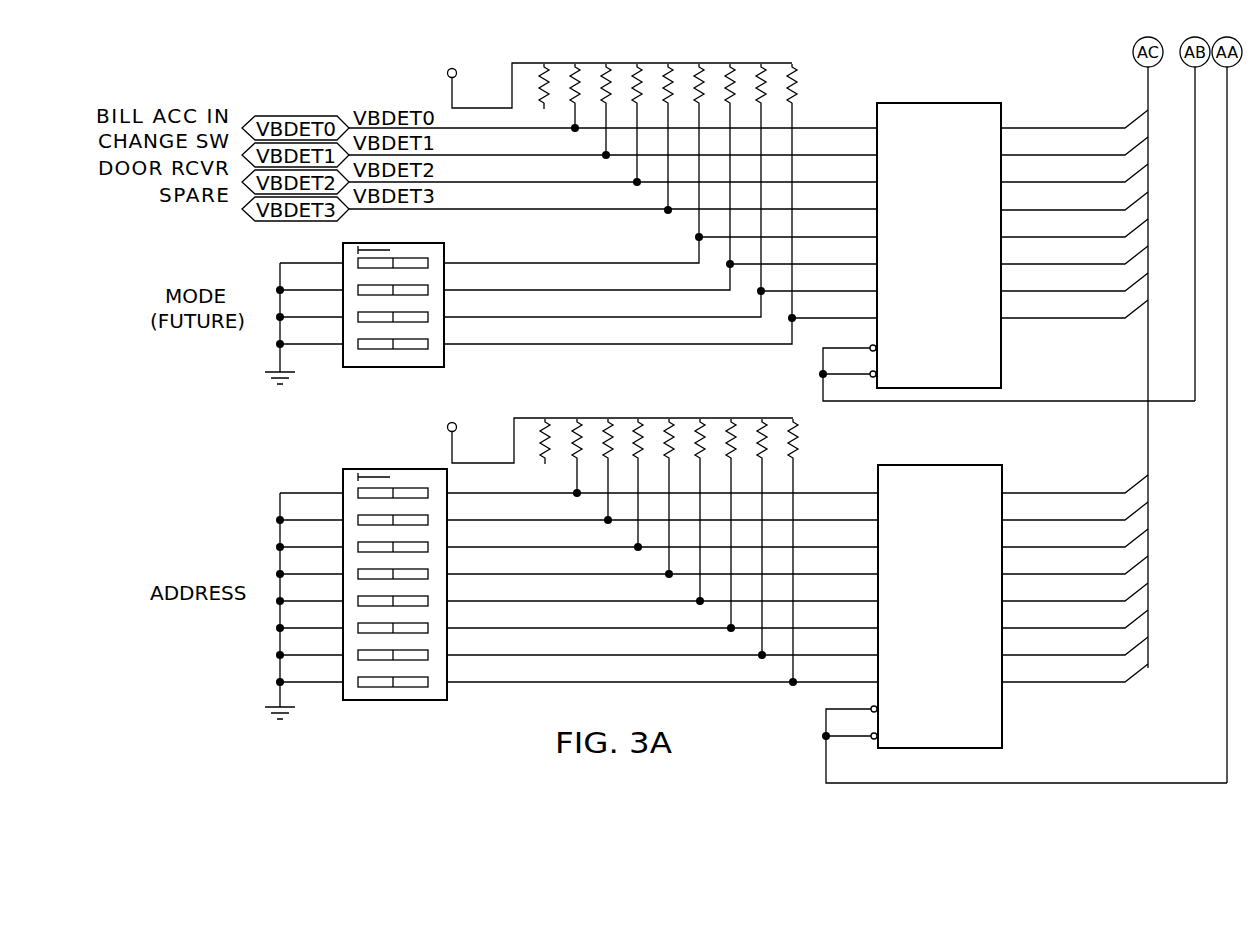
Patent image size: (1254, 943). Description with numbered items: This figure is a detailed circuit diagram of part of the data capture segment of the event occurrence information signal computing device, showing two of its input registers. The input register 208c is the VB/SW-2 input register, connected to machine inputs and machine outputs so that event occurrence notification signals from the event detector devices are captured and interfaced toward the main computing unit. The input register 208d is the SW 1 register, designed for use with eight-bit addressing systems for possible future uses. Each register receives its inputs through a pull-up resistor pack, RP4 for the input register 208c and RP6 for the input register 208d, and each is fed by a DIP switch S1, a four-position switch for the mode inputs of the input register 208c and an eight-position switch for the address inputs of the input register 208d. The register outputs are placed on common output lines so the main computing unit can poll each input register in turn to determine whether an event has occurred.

The input register 208c is at (977, 347).
The input register 208d is at (980, 710).
The 4.7K SIP pull-up resistor pack for VB/SW-2 inputs RP4 is at (614, 180).
The 4.7K SIP pull-up resistor pack for switch inputs RP6 is at (615, 539).
The DIP switches (SW DEP-4 mode switch and SW DEP-8 address switch) S1 is at (390, 472).